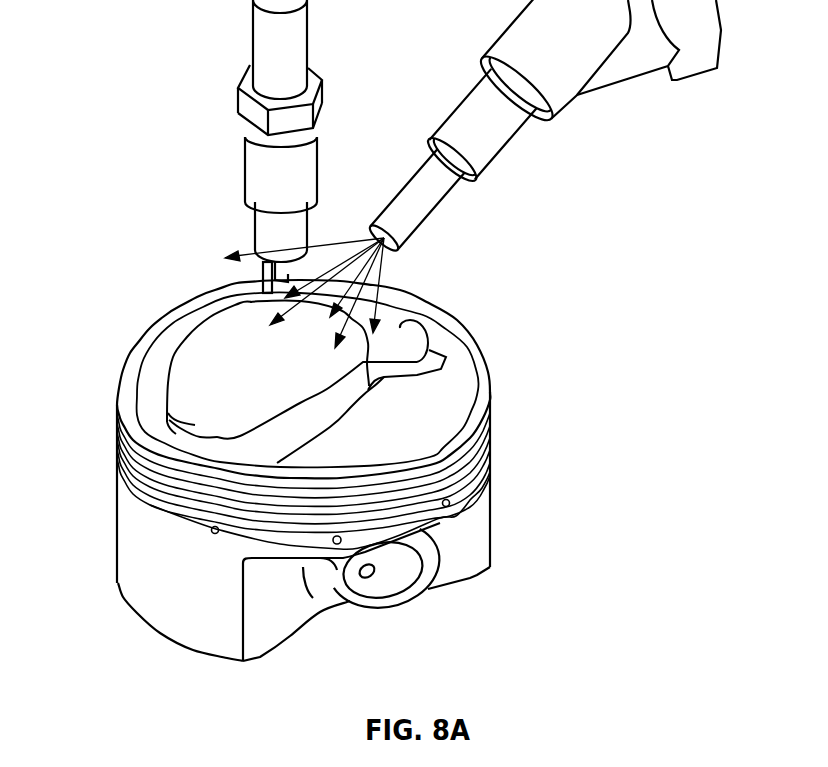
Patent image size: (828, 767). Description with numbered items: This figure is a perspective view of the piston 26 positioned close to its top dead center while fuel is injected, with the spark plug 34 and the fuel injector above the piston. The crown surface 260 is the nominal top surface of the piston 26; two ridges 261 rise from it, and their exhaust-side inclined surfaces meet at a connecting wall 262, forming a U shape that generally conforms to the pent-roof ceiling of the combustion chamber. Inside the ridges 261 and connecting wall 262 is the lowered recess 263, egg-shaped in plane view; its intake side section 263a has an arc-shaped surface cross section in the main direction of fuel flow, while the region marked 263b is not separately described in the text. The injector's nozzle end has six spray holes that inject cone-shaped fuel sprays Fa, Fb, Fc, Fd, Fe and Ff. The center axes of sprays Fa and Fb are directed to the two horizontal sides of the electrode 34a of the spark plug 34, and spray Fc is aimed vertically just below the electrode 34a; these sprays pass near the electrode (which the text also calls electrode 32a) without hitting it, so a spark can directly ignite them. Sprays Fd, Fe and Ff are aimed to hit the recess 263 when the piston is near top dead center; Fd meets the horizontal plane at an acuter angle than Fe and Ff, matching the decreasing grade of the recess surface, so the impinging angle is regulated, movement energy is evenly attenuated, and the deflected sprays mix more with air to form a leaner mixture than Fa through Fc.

The piston 26 is at (375, 465).
The crown surface 260 is at (256, 480).
The ridge 261 is at (207, 313).
The connecting wall 262 is at (195, 444).
The recess 263 is at (326, 360).
The intake side section 263a is at (460, 330).
The cavity end portion 263b is at (105, 411).
The electrode 32a is at (438, 187).
The spark plug 34 is at (225, 146).
The electrode 34a is at (263, 292).
The fuel spray Fa is at (338, 235).
The fuel spray Fb is at (250, 212).
The fuel spray Fc is at (300, 293).
The fuel spray Fd is at (371, 384).
The fuel spray Fe is at (365, 228).
The fuel spray Ff is at (387, 273).